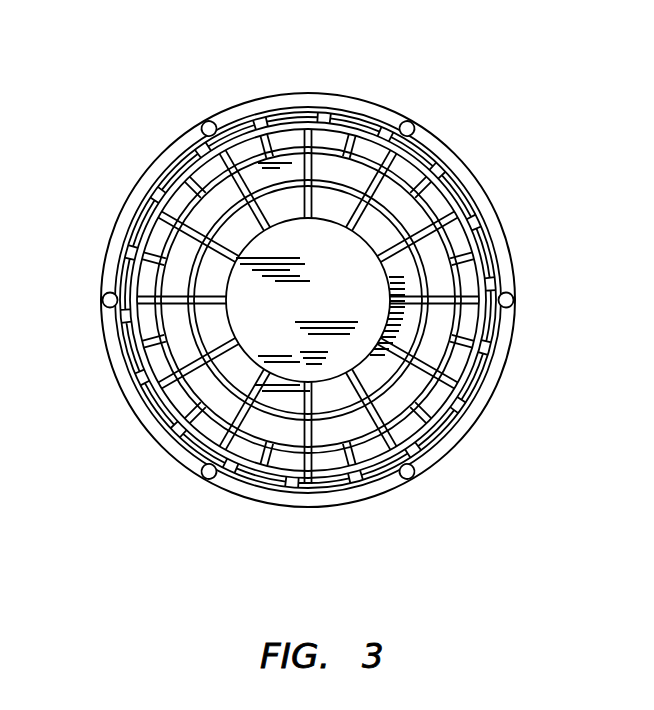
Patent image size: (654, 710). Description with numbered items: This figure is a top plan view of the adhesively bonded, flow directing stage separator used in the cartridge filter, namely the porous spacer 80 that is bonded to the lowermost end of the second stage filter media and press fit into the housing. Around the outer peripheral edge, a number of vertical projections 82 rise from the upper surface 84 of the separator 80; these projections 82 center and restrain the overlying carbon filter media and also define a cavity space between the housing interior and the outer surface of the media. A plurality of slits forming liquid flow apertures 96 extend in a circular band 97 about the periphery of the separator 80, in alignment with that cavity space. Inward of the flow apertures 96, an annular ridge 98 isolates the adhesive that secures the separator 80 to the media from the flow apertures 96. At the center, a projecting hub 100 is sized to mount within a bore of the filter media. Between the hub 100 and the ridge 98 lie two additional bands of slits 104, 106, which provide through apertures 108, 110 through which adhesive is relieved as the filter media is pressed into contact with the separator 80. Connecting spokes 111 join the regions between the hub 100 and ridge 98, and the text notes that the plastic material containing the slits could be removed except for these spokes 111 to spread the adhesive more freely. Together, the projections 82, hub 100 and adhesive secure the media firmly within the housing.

The porous spacer 80 is at (506, 198).
The projections 82 is at (204, 121).
The upper surface 84 is at (397, 198).
The liquid flow apertures 96 is at (112, 262).
The circular band 97 is at (112, 374).
The annular ridge 98 is at (162, 409).
The center hub 100 is at (363, 287).
The band of slits 104 is at (290, 136).
The band of slits 106 is at (331, 160).
The through apertures 108 is at (243, 453).
The through apertures 110 is at (288, 415).
The connecting spokes 111 is at (383, 343).